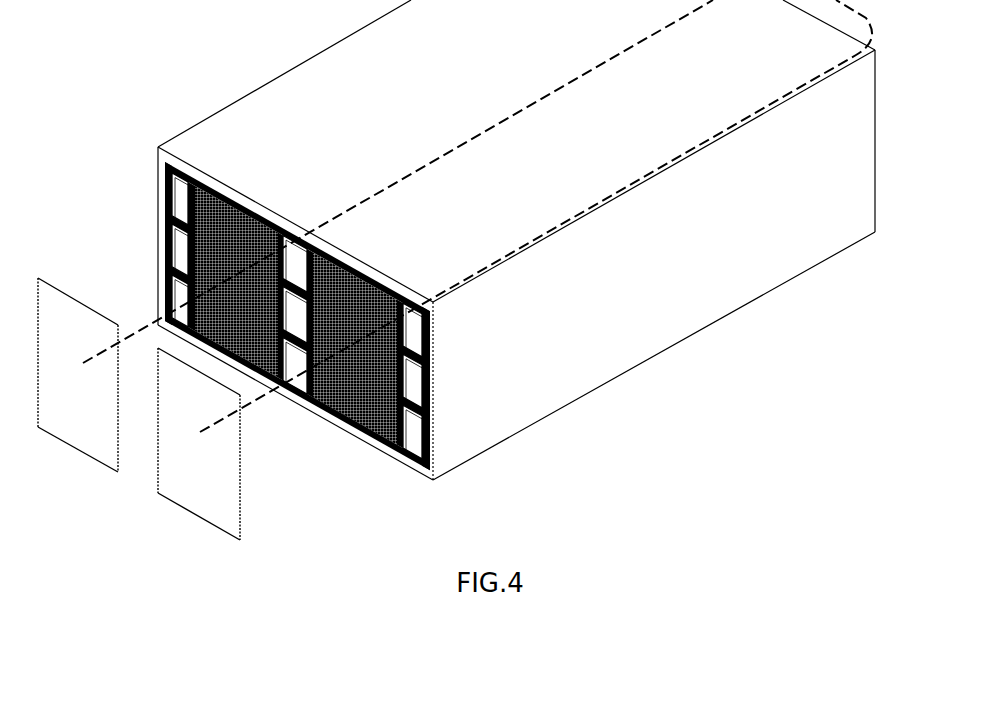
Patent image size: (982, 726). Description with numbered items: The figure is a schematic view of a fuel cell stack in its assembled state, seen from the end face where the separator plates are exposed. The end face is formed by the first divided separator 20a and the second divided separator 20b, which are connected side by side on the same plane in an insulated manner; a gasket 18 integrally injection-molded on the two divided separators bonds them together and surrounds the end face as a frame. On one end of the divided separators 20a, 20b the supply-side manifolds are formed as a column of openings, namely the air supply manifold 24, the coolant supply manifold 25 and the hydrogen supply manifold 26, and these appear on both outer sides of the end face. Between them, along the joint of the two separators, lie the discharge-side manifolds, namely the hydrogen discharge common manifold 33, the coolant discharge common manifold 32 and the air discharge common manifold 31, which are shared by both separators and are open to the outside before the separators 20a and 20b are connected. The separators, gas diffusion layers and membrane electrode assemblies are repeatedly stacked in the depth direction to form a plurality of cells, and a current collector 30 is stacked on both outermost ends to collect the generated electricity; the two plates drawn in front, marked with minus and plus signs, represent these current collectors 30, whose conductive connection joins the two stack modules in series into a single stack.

The gasket 18 is at (165, 173).
The first divided separator 20a is at (181, 154).
The second divided separator 20b is at (445, 478).
The air supply manifold 24 is at (183, 192).
The coolant supply manifold 25 is at (185, 238).
The hydrogen supply manifold 26 is at (182, 301).
The current collector 30 is at (163, 486).
The air discharge common manifold 31 is at (302, 378).
The coolant discharge common manifold 32 is at (303, 310).
The hydrogen discharge common manifold 33 is at (297, 257).